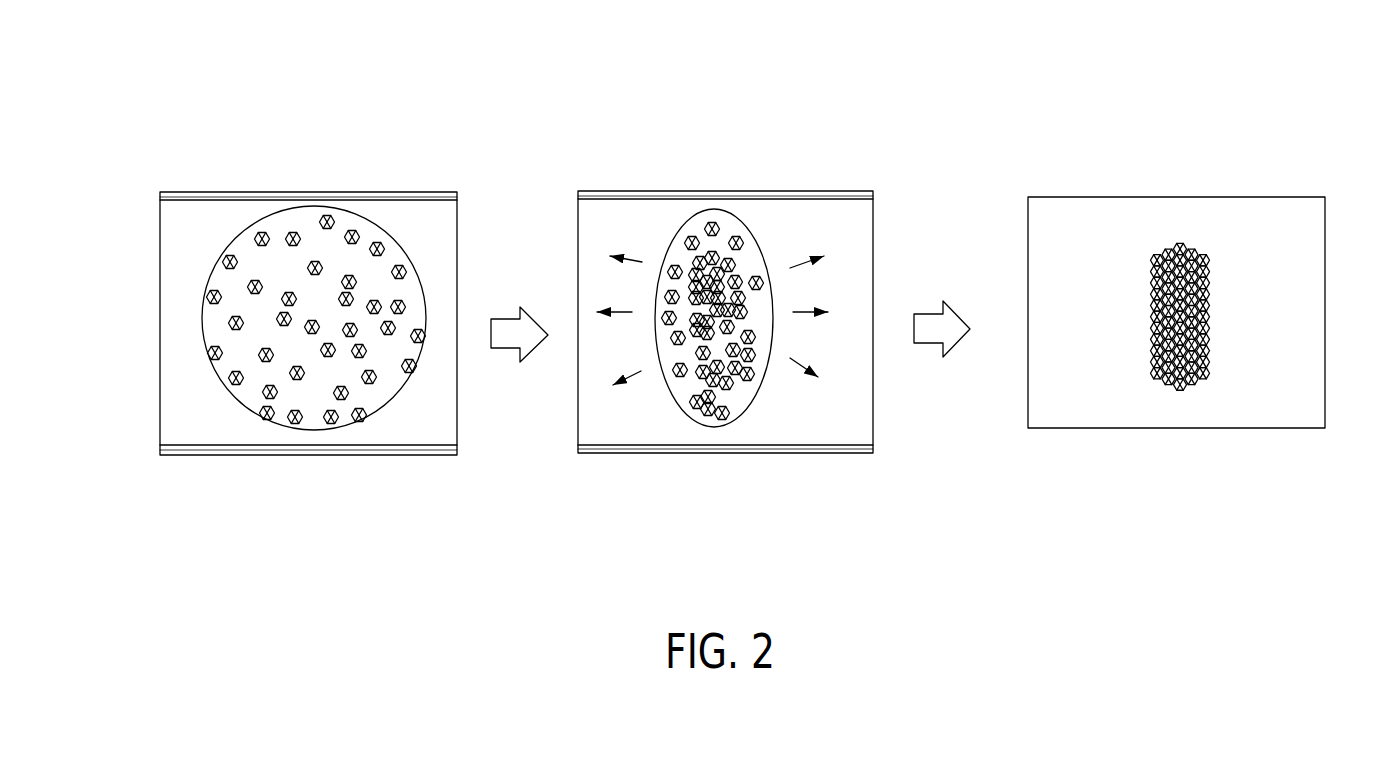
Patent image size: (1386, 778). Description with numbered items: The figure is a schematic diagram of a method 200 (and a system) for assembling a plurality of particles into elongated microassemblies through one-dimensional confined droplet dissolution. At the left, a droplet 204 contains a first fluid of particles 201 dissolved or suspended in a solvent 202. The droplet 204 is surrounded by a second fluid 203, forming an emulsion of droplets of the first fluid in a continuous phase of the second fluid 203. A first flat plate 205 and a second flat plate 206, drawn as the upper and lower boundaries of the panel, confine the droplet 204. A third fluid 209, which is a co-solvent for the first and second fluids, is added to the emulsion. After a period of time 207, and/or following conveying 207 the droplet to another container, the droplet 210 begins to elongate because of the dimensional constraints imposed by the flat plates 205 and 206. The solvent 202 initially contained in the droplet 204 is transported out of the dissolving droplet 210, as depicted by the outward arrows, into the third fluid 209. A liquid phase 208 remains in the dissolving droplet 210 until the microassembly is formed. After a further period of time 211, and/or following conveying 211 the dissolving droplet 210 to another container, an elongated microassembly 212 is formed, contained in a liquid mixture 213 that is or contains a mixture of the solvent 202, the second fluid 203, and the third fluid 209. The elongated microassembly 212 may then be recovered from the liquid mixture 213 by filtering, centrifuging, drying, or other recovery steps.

The method 200 is at (1141, 133).
The particles 201 is at (292, 430).
The solvent 202 is at (388, 362).
The second fluid 203 is at (246, 420).
The droplet 204 is at (203, 323).
The first flat plate 205 is at (160, 195).
The second flat plate 206 is at (160, 450).
The period of time 207 is at (507, 319).
The liquid phase 208 is at (727, 396).
The third fluid 209 is at (644, 422).
The dissolving droplet 210 is at (737, 222).
The period of time 211 is at (920, 314).
The elongated microassembly 212 is at (1218, 352).
The liquid mixture 213 is at (1141, 401).